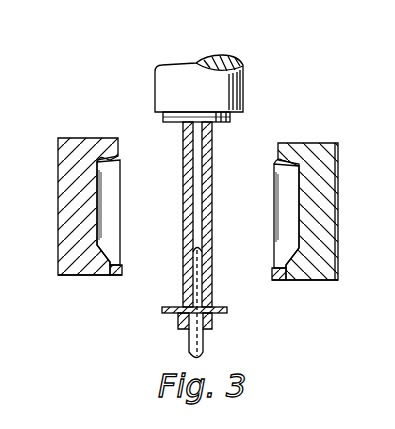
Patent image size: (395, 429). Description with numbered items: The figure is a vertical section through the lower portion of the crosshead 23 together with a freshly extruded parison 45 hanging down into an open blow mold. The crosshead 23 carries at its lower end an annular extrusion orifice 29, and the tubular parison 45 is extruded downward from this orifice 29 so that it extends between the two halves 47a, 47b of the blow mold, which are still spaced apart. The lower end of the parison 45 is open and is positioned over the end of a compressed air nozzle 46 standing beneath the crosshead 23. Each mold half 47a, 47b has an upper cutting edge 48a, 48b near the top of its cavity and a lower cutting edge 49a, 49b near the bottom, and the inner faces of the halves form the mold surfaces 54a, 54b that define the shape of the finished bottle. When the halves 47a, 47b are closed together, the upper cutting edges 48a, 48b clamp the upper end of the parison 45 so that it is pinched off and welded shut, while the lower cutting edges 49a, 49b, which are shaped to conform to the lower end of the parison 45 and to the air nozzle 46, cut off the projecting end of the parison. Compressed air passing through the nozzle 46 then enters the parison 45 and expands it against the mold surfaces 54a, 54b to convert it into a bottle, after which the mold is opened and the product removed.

The crosshead 23 is at (254, 57).
The annular extrusion orifice 29 is at (223, 126).
The parison 45 is at (213, 198).
The compressed air nozzle 46 is at (195, 274).
The blow mold half 47a is at (63, 266).
The blow mold half 47b is at (310, 282).
The cutting edge 48a is at (143, 146).
The cutting edge 48b is at (272, 160).
The cutting edge 49a is at (123, 277).
The cutting edge 49b is at (273, 280).
The mold surface 54a is at (99, 213).
The mold surface 54b is at (300, 193).